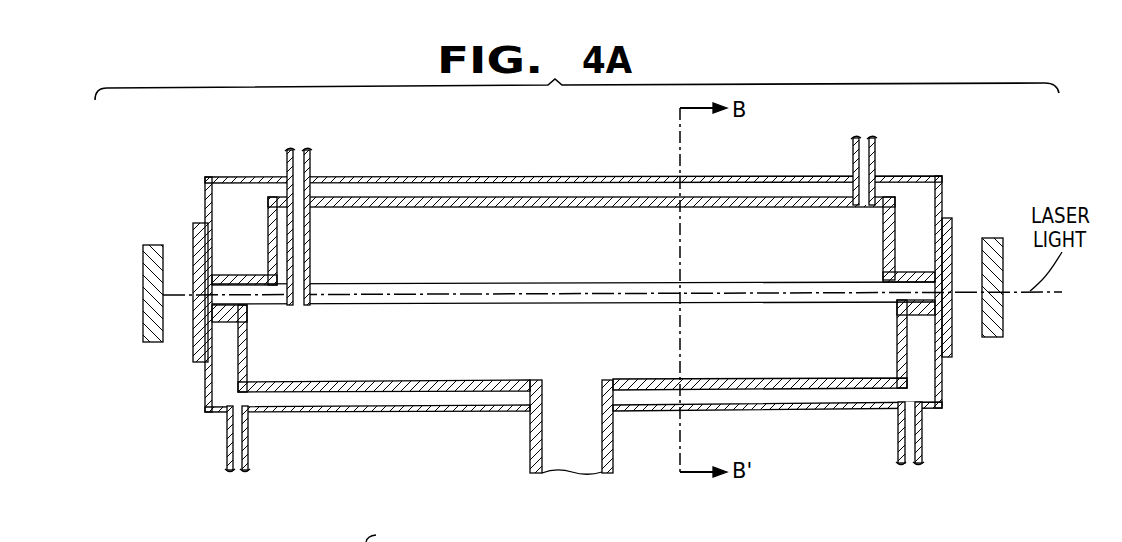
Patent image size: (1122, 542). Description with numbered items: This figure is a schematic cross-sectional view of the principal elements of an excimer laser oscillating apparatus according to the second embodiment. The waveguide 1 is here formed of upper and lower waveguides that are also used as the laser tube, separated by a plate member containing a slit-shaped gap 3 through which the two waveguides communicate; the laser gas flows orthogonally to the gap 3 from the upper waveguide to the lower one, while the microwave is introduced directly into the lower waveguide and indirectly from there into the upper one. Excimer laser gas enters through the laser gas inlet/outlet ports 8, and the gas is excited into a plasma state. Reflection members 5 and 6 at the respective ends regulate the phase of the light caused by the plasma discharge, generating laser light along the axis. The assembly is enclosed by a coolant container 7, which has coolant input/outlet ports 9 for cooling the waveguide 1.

The waveguide 1 is at (357, 393).
The slit-shaped gap 3 is at (773, 282).
The reflection member 5 is at (1004, 318).
The reflection member 6 is at (143, 292).
The coolant container 7 is at (300, 412).
The laser gas inlet/outlet port 8 is at (311, 154).
The coolant input/outlet port 9 is at (227, 457).